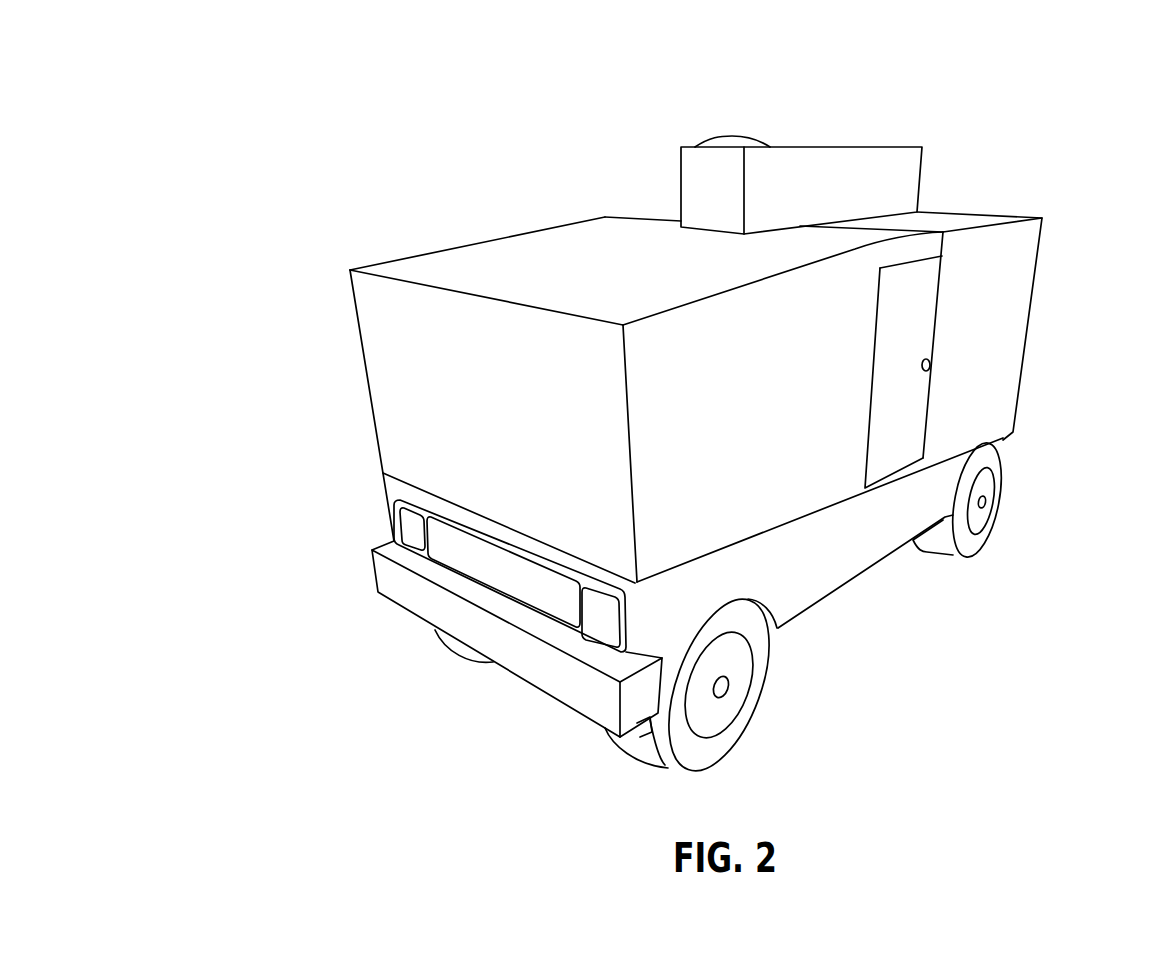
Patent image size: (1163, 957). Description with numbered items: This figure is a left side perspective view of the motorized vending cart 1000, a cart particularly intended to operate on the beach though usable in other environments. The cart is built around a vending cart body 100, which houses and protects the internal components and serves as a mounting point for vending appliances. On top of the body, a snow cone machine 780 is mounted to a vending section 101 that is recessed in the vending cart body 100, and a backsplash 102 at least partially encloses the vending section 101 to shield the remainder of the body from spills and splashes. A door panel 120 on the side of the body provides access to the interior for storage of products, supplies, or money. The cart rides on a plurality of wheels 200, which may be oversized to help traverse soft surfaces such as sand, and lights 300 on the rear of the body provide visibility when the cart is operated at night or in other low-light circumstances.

The motorized vending cart 1000 is at (245, 273).
The vending cart body 100 is at (489, 240).
The vending section 101 is at (831, 147).
The backsplash 102 is at (910, 177).
The door panel 120 is at (918, 337).
The wheel 200 is at (442, 638).
The light 300 is at (405, 530).
The snow cone machine 780 is at (721, 138).